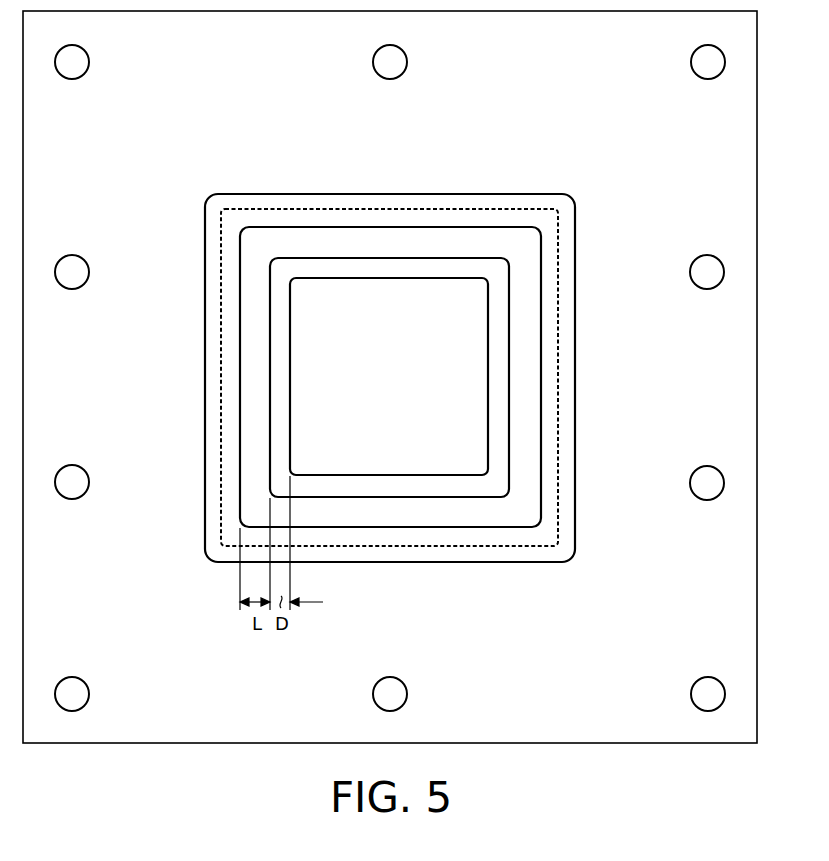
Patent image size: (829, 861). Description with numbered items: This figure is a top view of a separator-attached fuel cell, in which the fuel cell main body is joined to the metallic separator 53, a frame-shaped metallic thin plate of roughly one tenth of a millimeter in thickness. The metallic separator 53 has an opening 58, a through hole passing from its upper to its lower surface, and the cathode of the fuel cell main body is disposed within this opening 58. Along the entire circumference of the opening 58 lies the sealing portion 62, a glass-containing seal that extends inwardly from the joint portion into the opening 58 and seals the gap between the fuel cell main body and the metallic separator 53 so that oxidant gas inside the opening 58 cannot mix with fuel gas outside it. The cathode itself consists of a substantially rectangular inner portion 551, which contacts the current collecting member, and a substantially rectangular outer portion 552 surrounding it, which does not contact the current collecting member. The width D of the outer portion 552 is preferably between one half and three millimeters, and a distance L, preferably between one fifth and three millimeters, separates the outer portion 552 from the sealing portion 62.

The metallic separator 53 is at (378, 627).
The opening 58 is at (317, 208).
The sealing portion 62 is at (470, 199).
The inner portion 551 is at (375, 388).
The outer portion 552 is at (362, 257).